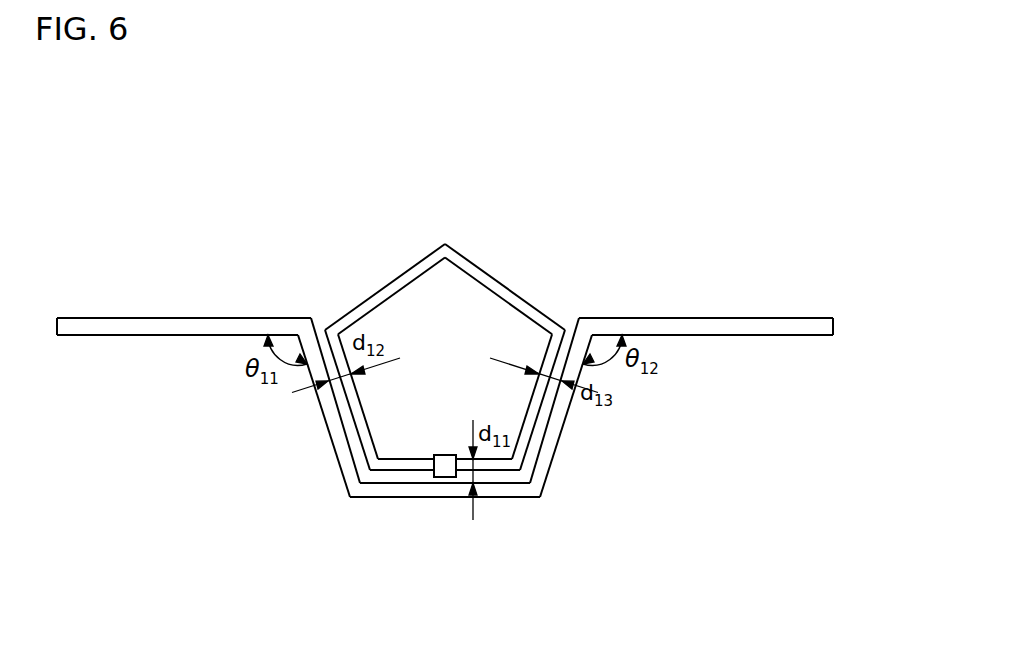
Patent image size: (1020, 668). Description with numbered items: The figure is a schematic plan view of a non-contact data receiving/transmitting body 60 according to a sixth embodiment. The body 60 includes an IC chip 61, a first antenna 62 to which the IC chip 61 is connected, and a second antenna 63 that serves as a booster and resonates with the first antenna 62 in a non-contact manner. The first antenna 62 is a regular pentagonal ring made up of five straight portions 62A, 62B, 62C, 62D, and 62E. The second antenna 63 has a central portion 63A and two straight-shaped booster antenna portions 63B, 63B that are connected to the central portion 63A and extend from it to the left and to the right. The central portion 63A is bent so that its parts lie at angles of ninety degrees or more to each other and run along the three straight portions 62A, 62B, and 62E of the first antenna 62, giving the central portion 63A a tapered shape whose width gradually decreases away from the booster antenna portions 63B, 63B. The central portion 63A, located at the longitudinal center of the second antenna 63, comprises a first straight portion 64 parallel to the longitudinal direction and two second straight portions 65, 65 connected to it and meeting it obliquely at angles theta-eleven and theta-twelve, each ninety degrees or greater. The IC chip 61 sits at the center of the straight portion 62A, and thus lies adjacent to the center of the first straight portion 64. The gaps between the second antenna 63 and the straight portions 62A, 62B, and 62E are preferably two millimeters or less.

The non-contact data receiving/transmitting body 60 is at (688, 172).
The IC chip 61 is at (443, 455).
The first antenna 62 is at (419, 335).
The straight portion 62A is at (413, 461).
The straight portion 62B is at (353, 405).
The straight portion 62C is at (397, 278).
The straight portion 62D is at (500, 283).
The straight portion 62E is at (543, 374).
The second antenna 63 is at (445, 413).
The central portion 63A is at (350, 522).
The booster antenna portion 63B is at (310, 302).
The first straight portion 64 is at (385, 488).
The second straight portion 65 is at (330, 410).